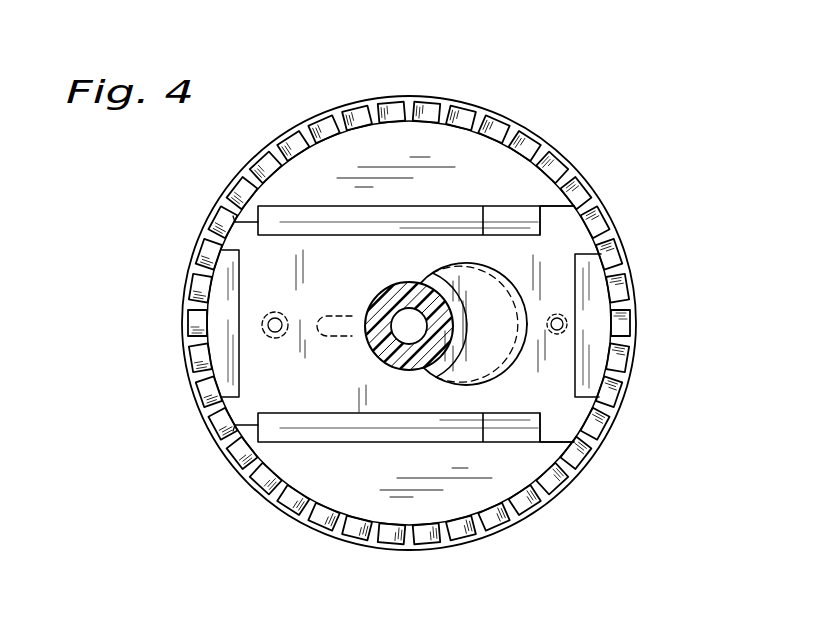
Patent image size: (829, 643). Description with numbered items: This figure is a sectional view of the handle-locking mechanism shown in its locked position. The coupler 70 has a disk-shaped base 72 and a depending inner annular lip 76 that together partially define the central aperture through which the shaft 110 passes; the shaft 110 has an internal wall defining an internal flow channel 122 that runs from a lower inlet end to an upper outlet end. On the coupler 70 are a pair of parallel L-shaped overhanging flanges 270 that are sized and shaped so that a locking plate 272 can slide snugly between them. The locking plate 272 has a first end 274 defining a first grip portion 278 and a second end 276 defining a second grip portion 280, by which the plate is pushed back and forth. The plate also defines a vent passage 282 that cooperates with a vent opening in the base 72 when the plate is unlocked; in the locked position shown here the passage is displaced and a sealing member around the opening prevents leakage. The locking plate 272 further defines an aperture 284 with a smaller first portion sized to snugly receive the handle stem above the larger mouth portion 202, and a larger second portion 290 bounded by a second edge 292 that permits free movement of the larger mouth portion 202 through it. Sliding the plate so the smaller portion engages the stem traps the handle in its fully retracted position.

The coupler 70 is at (638, 266).
The disk-shaped base 72 is at (512, 173).
The inner annular lip 76 is at (445, 290).
The shaft 110 is at (390, 292).
The internal flow channel 122 is at (400, 330).
The larger mouth portion 202 is at (458, 305).
The L-shaped overhanging flanges 270 is at (422, 218).
The locking plate 272 is at (242, 217).
The first end 274 is at (203, 415).
The second end 276 is at (568, 213).
The first grip portion 278 is at (228, 285).
The second grip portion 280 is at (595, 342).
The vent passage 282 is at (325, 318).
The aperture 284 is at (574, 440).
The larger second portion 290 is at (503, 310).
The second edge 292 is at (488, 357).